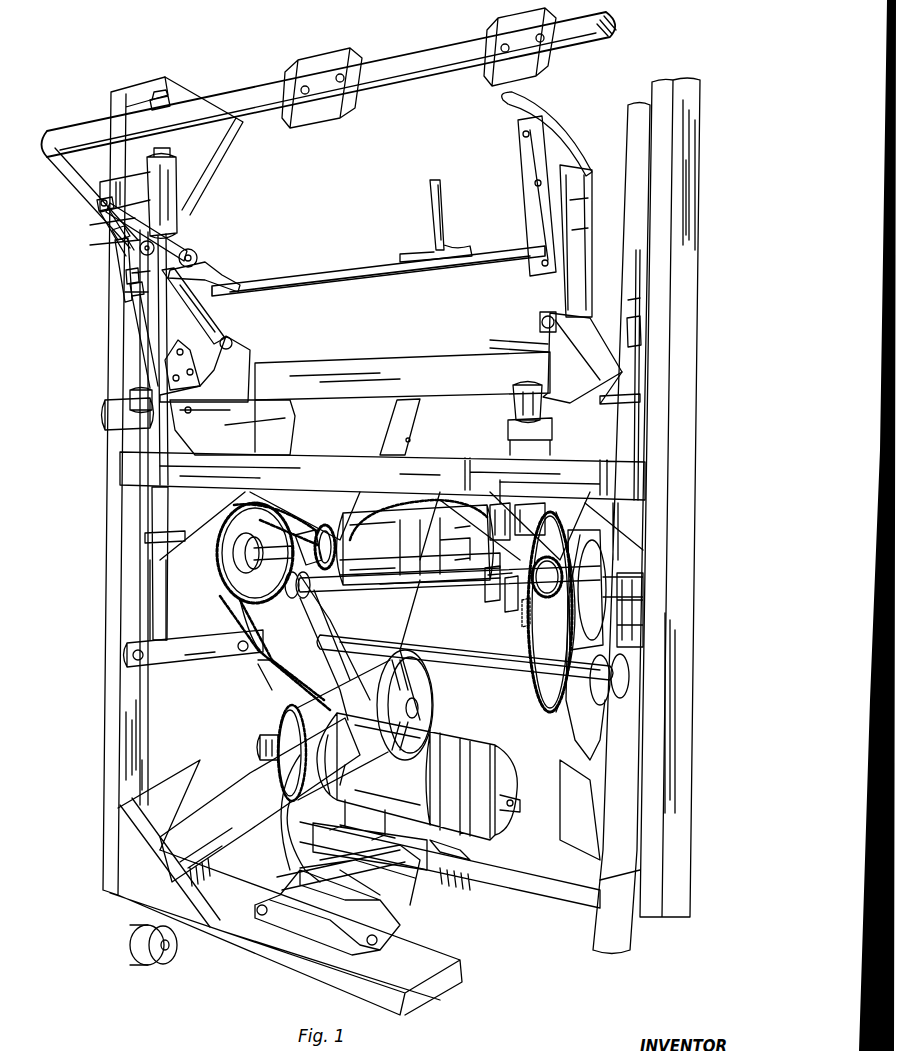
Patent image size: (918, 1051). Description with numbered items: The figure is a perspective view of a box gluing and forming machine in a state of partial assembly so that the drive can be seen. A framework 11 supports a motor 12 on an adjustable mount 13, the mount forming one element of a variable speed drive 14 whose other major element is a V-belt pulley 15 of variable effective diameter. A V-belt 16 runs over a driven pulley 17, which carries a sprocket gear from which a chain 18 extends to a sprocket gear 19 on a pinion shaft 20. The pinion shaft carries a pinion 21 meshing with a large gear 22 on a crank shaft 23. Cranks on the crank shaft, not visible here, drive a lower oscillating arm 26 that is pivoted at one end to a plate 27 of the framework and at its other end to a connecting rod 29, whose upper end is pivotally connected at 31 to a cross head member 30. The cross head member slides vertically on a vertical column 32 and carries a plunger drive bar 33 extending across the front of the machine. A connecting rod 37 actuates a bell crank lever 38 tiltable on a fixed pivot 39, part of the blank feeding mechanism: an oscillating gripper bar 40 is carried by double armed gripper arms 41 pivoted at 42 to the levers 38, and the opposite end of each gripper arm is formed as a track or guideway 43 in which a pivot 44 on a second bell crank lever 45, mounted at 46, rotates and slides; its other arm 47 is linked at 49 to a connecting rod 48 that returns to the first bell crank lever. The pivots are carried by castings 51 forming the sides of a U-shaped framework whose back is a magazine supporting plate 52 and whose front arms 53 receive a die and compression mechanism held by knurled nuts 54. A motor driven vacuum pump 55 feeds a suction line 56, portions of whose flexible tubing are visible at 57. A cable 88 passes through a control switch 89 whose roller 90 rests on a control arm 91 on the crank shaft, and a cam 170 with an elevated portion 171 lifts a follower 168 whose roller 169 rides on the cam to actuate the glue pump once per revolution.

The framework 11 is at (108, 684).
The motor 12 is at (374, 772).
The adjustable mount 13 is at (318, 918).
The variable speed drive 14 is at (270, 812).
The V-belt pulley 15 is at (290, 714).
The V-belt 16 is at (358, 676).
The driven pulley 17 is at (414, 684).
The chain 18 is at (272, 660).
The sprocket gear 19 is at (224, 592).
The pinion shaft 20 is at (395, 562).
The pinion 21 is at (540, 560).
The large gear 22 is at (545, 690).
The crank shaft 23 is at (425, 594).
The lower oscillating arm 26 is at (187, 660).
The plate 27 is at (268, 680).
The connecting rod 29 is at (156, 572).
The cross head member 30 is at (100, 218).
The pivotal connection 31 is at (642, 338).
The vertical column 32 is at (172, 148).
The plunger drive bar 33 is at (406, 66).
The connecting rod 37 is at (200, 376).
The bell crank lever 38 is at (210, 312).
The fixed pivot 39 is at (232, 340).
The oscillating gripper bar 40 is at (268, 286).
The gripper arm 41 is at (192, 254).
The pivot 42 is at (152, 256).
The track or guideway 43 is at (96, 204).
The pivot 44 is at (112, 232).
The second bell crank lever 45 is at (118, 258).
The pivotal mounting 46 is at (170, 238).
The arm 47 is at (126, 274).
The connecting rod 48 is at (140, 296).
The link pivot 49 is at (130, 290).
The casting 51 is at (390, 384).
The magazine supporting plate 52 is at (420, 385).
The front arm or extension 53 is at (105, 416).
The knurled nut 54 is at (130, 400).
The motor driven vacuum pump 55 is at (378, 512).
The suction line 56 is at (496, 504).
The flexible tubing 57 is at (470, 246).
The cable 88 is at (304, 592).
The control switch 89 is at (326, 536).
The roller 90 is at (300, 536).
The control arm 91 is at (268, 584).
The follower 168 is at (514, 508).
The roller 169 is at (494, 580).
The cam 170 is at (505, 610).
The elevated portion 171 is at (526, 628).